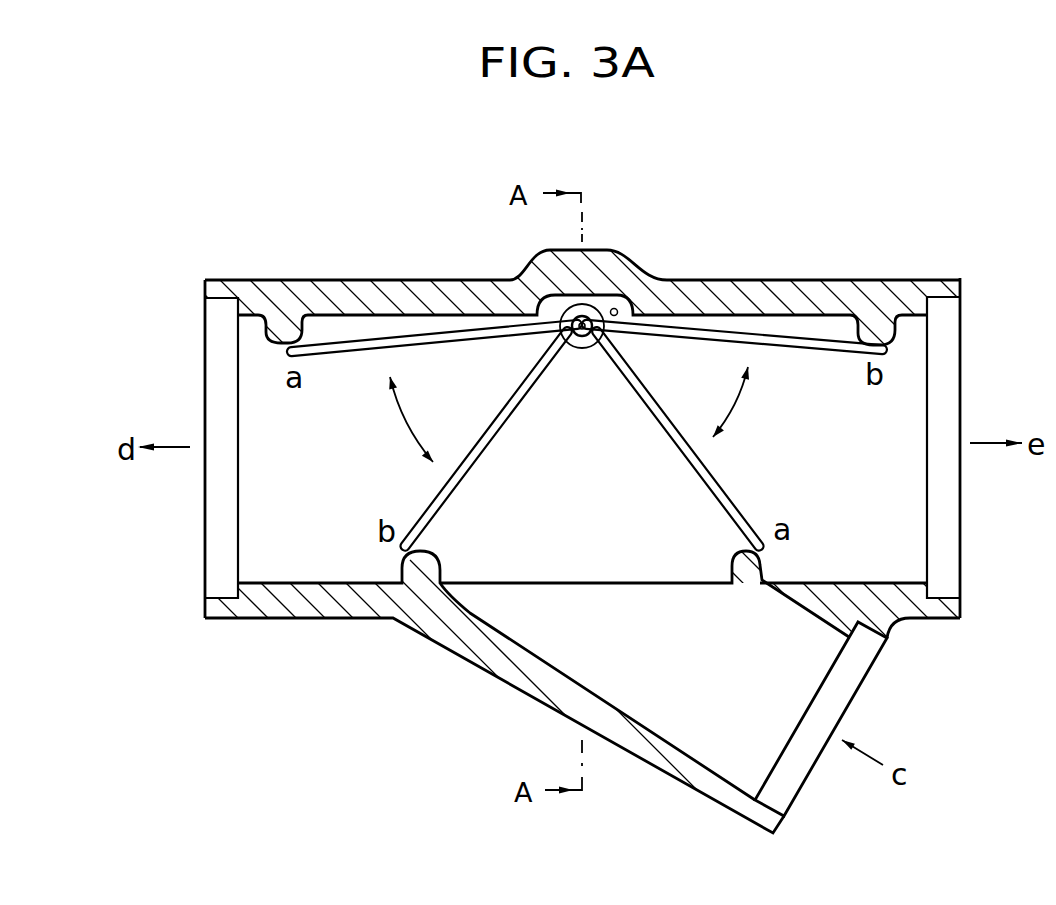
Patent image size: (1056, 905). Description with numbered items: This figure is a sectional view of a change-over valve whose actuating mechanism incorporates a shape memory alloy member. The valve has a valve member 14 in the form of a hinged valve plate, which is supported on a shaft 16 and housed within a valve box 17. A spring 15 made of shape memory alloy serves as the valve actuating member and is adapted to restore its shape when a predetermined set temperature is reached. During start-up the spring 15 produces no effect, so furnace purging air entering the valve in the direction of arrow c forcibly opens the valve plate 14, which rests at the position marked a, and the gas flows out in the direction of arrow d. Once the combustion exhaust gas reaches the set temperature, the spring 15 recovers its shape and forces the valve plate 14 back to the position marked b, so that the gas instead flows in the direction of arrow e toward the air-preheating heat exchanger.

The valve member 14 is at (697, 477).
The spring 15 is at (582, 349).
The shaft 16 is at (586, 320).
The valve box 17 is at (755, 281).